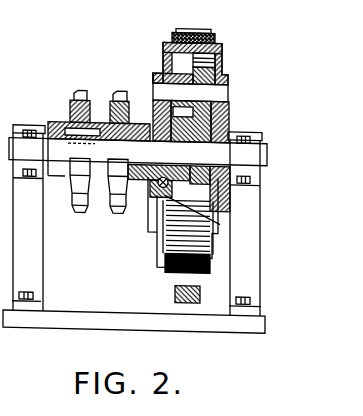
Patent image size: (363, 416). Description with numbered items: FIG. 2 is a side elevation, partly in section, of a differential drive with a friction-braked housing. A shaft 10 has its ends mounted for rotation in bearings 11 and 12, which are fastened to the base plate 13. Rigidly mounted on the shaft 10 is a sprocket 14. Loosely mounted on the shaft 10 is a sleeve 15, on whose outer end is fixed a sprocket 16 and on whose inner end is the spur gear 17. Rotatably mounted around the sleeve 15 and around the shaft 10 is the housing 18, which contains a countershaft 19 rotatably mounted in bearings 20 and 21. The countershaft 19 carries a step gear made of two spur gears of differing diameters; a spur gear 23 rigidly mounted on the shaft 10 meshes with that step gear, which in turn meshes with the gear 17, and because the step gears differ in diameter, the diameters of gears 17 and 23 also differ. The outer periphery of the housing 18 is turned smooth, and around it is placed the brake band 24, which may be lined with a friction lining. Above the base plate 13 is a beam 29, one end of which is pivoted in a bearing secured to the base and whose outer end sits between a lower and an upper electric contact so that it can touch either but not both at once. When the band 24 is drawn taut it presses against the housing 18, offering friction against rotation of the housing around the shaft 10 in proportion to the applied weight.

The shaft 10 is at (273, 176).
The bearing 11 is at (39, 128).
The bearing 12 is at (259, 139).
The base plate 13 is at (134, 320).
The sprocket 14 is at (86, 86).
The sleeve 15 is at (135, 124).
The sprocket 16 is at (115, 92).
The spur gear 17 is at (170, 188).
The housing 18 is at (222, 52).
The countershaft 19 is at (204, 90).
The bearing 20 is at (155, 79).
The bearing 21 is at (229, 92).
The spur gear 23 is at (229, 188).
The brake band 24 is at (186, 34).
The beam 29 is at (173, 297).